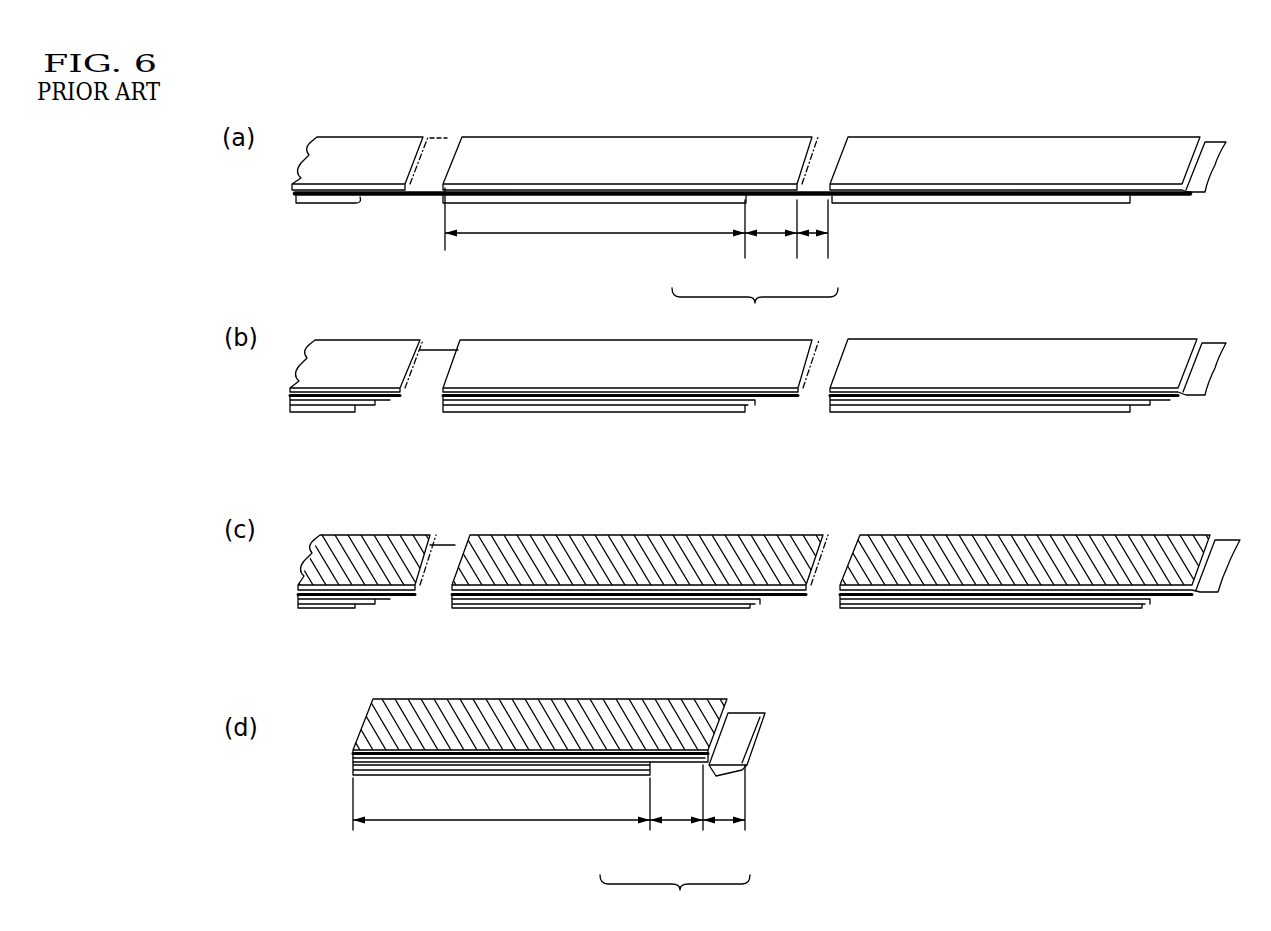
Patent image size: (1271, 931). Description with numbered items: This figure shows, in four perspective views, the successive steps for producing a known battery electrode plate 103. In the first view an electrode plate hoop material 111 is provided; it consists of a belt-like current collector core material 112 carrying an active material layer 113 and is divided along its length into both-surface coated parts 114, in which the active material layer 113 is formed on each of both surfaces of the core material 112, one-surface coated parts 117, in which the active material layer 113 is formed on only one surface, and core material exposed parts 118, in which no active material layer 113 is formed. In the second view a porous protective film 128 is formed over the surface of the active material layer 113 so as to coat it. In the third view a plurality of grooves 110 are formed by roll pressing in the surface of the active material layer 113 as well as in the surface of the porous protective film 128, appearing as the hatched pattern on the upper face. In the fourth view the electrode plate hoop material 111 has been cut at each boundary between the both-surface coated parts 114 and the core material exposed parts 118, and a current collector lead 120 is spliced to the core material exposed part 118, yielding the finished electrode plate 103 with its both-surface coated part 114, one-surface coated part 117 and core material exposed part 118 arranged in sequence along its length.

The electrode plate 103 is at (627, 695).
The grooves 110 is at (357, 570).
The electrode plate hoop material 111 is at (892, 132).
The current collector core material 112 is at (826, 150).
The active material layer 113 is at (383, 152).
The both-surface coated parts 114 is at (667, 237).
The one-surface coated parts 117 is at (765, 236).
The core material exposed parts 118 is at (812, 236).
The current collector lead 120 is at (745, 727).
The porous protective film 128 is at (375, 352).